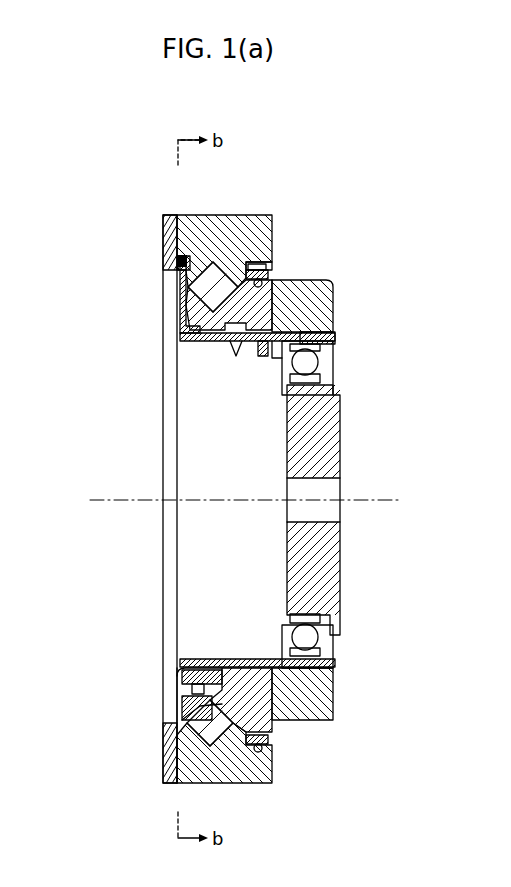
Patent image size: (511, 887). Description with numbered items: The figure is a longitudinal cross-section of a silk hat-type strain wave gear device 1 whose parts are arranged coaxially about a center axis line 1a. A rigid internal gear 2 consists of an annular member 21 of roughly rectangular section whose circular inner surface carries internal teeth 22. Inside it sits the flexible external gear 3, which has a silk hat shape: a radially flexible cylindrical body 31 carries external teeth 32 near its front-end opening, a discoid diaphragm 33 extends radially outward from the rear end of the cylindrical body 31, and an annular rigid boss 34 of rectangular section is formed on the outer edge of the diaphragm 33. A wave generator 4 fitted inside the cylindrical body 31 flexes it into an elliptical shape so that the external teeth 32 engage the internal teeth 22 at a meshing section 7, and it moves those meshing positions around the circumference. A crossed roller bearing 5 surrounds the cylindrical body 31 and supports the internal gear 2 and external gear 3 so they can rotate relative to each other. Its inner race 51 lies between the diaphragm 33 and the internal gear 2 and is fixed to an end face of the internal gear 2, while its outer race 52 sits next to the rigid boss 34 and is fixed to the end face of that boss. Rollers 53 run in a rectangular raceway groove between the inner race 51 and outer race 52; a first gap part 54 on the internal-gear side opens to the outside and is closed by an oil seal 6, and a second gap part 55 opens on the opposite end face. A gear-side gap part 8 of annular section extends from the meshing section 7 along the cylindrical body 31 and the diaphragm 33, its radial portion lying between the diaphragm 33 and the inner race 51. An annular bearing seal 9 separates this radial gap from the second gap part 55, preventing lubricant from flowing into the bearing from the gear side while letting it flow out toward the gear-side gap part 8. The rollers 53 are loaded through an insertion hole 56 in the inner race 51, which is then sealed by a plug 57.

The silk hat-type strain wave gear device 1 is at (376, 201).
The center axis line 1a is at (120, 512).
The rigid internal gear 2 is at (335, 478).
The annular member 21 is at (318, 285).
The internal teeth 22 is at (333, 330).
The flexible external gear 3 is at (128, 499).
The cylindrical body 31 is at (234, 353).
The external teeth 32 is at (273, 352).
The diaphragm 33 is at (180, 318).
The rigid boss 34 is at (163, 251).
The wave generator 4 is at (352, 452).
The crossed roller bearing 5 is at (226, 242).
The inner race 51 is at (288, 292).
The outer race 52 is at (224, 272).
The rollers 53 is at (208, 262).
The first gap part 54 is at (252, 266).
The second gap part 55 is at (192, 240).
The insertion hole 56 is at (182, 704).
The plug 57 is at (182, 673).
The oil seal 6 is at (268, 268).
The meshing section 7 is at (263, 348).
The gear-side gap part 8 is at (184, 347).
The bearing seal 9 is at (176, 264).